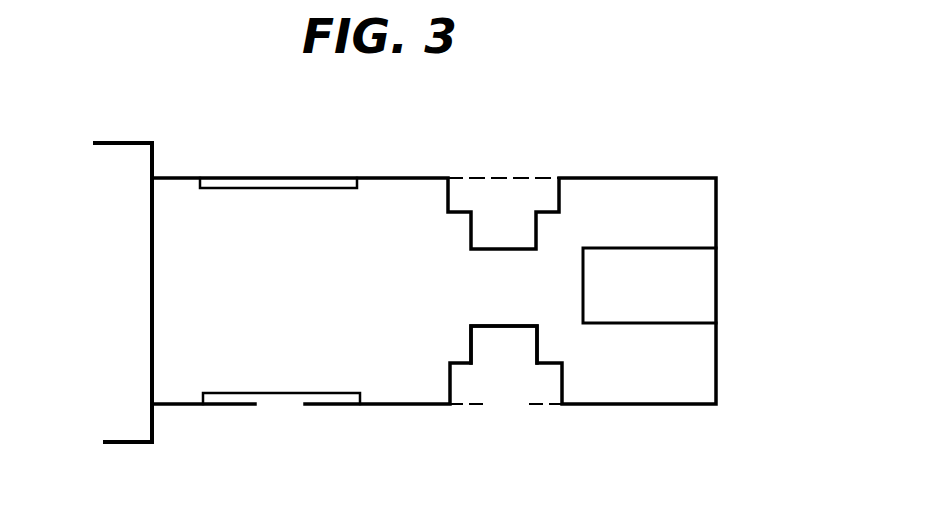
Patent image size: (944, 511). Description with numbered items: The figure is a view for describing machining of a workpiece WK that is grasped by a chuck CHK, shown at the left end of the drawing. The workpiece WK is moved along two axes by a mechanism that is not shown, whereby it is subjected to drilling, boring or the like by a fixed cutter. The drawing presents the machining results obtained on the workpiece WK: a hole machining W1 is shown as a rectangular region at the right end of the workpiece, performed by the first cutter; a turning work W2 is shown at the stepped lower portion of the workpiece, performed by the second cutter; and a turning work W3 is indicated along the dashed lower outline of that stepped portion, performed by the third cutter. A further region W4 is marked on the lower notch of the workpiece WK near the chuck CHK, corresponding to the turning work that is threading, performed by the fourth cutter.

The chuck CHK is at (119, 150).
The workpiece WK is at (652, 179).
The hole machining W1 is at (649, 285).
The turning work W2 is at (504, 351).
The turning work W3 is at (506, 402).
The fourth machining region W4 is at (280, 303).